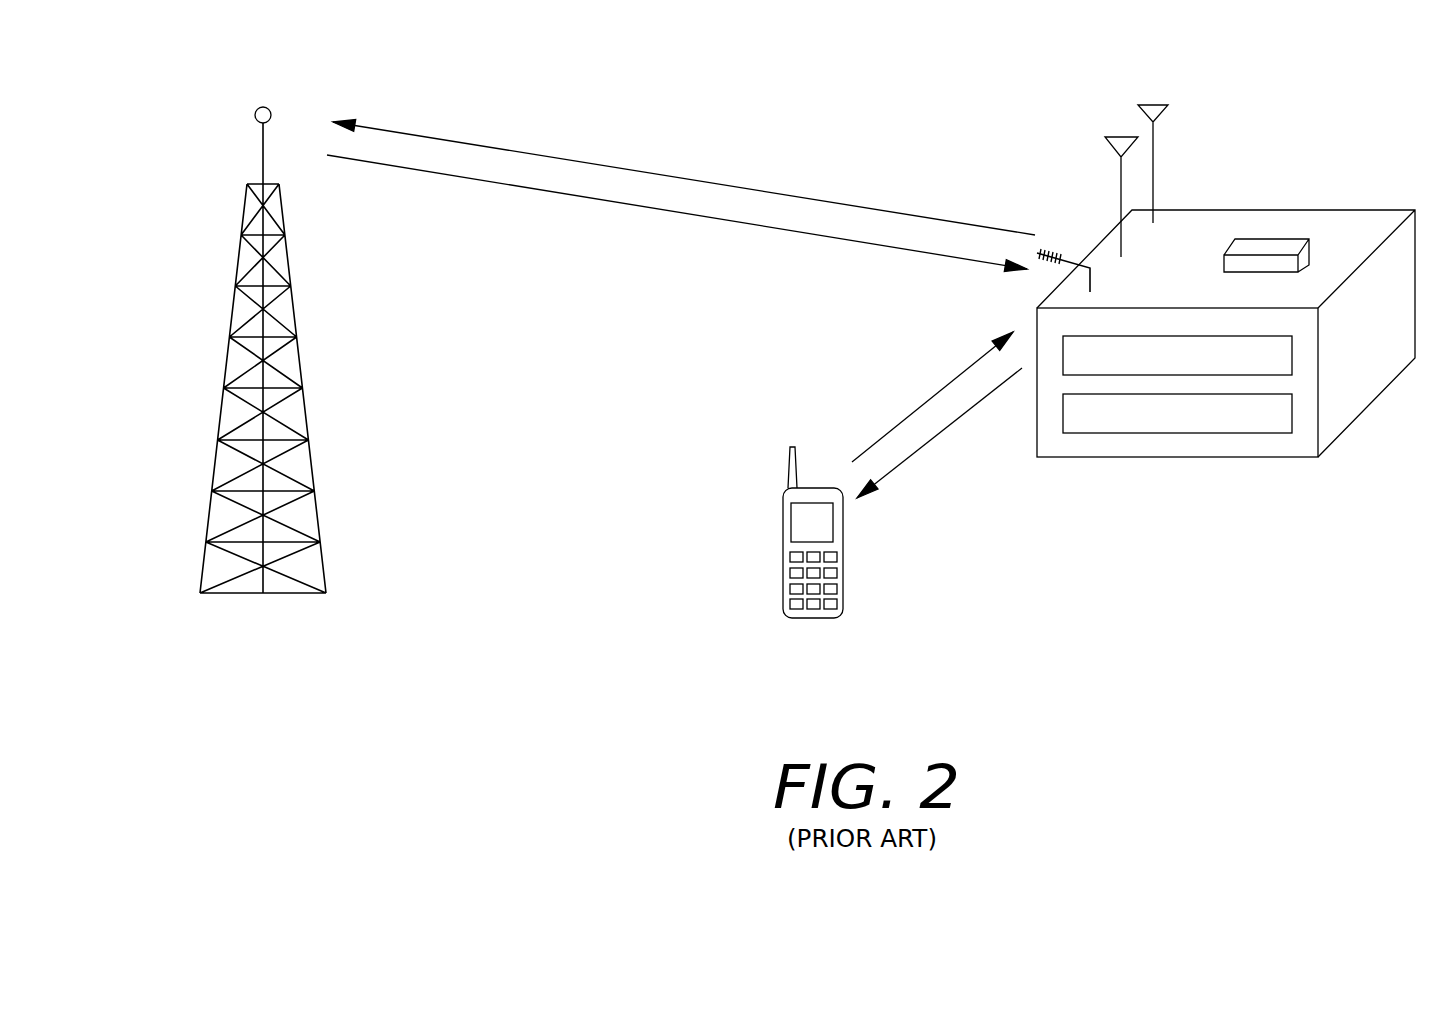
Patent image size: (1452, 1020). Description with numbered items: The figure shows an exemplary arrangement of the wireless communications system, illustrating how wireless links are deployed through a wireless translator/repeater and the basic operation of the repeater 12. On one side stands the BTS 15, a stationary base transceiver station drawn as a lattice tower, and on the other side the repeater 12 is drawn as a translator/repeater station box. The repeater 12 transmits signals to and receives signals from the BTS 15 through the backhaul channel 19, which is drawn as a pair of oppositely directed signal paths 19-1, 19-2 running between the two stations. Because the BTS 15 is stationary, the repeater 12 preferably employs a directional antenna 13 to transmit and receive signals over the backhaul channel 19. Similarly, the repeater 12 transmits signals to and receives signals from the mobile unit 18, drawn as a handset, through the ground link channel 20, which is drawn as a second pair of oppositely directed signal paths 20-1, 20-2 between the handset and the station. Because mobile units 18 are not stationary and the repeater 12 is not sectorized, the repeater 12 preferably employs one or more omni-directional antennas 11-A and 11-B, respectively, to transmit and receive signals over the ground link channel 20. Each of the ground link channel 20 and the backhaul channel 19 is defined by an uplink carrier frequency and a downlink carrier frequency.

The omni-directional antenna 11-A is at (1112, 136).
The omni-directional antenna 11-B is at (1148, 105).
The repeater 12 is at (1238, 207).
The directional antenna 13 is at (1055, 250).
The BTS 15 is at (308, 412).
The mobile unit 18 is at (783, 547).
The backhaul channel 19 is at (681, 183).
The forward signal path from translator/repeater station to base transceiver station 19-1 is at (815, 197).
The signal path from base transceiver station to translator/repeater station 19-2 is at (770, 226).
The ground link channel 20 is at (919, 430).
The signal path from mobile unit to translator/repeater station 20-1 is at (938, 387).
The signal path from translator/repeater station to mobile unit 20-2 is at (900, 462).